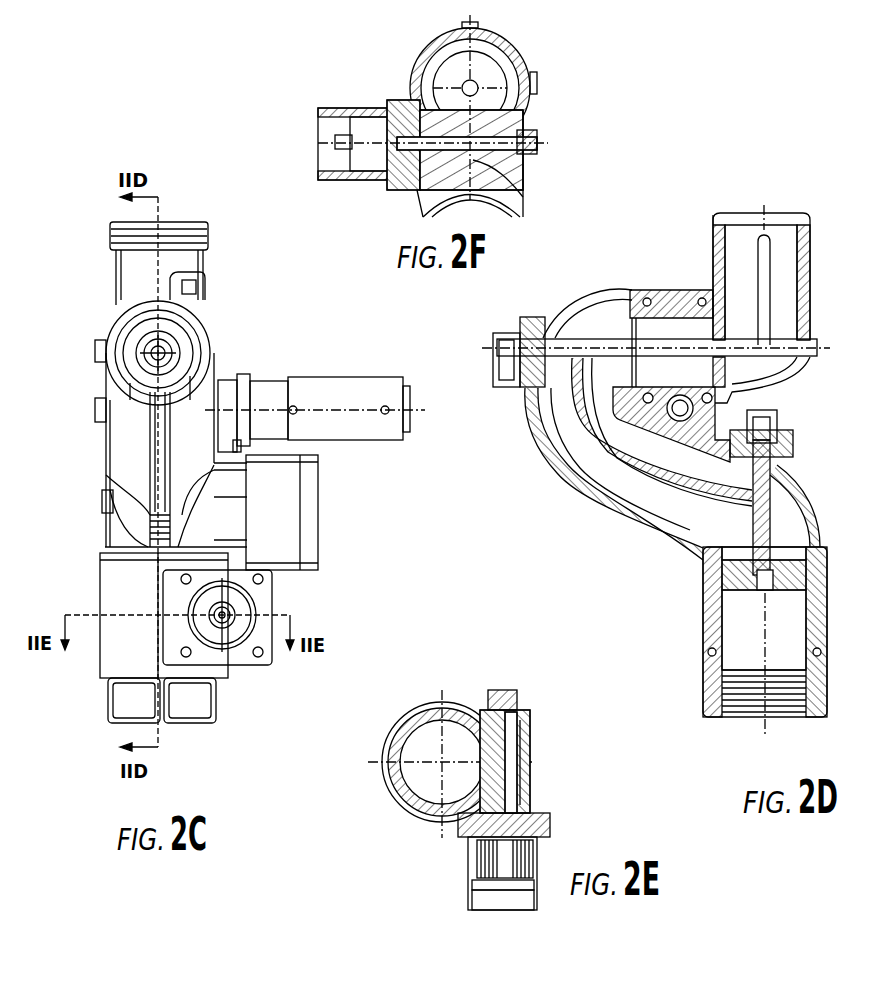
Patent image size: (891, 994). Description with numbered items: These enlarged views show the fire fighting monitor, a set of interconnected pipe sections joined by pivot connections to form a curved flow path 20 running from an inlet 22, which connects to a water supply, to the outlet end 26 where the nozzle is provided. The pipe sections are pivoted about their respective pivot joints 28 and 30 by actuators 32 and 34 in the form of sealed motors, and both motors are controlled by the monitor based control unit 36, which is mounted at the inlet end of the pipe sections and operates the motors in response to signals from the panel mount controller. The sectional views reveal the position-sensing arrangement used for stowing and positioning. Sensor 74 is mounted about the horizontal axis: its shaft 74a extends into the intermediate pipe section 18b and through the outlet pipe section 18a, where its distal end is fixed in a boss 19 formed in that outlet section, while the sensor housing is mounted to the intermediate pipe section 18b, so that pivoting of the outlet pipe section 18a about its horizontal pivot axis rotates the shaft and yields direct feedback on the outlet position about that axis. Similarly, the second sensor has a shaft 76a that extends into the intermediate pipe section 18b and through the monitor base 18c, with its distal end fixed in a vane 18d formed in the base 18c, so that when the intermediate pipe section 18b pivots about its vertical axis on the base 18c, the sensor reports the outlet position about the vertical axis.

In FIG. 2D, the outlet pipe section 18a is at (742, 213).
In FIG. 2D, the intermediate pipe section 18b is at (582, 500).
In FIG. 2E, the intermediate pipe section 18b is at (433, 705).
In FIG. 2D, the monitor base 18c is at (708, 700).
In FIG. 2D, the vane 18d is at (712, 585).
In FIG. 2D, the boss 19 is at (812, 338).
In FIG. 2D, the curved flow path 20 is at (575, 458).
In FIG. 2C, the inlet 22 is at (195, 722).
In FIG. 2D, the inlet 22 is at (745, 720).
In FIG. 2C, the outlet end 26 is at (185, 226).
In FIG. 2D, the pivot joint 28 is at (705, 627).
In FIG. 2D, the pivot joint 30 is at (638, 290).
In FIG. 2C, the actuator 32 is at (255, 634).
In FIG. 2E, the actuator 32 is at (462, 858).
In FIG. 2C, the actuator 34 is at (318, 378).
In FIG. 2F, the actuator 34 is at (578, 108).
In FIG. 2C, the monitor based control unit 36 is at (328, 492).
In FIG. 2D, the sensor 74 is at (537, 310).
In FIG. 2D, the shaft 74a is at (603, 340).
In FIG. 2D, the shaft 76a is at (755, 485).